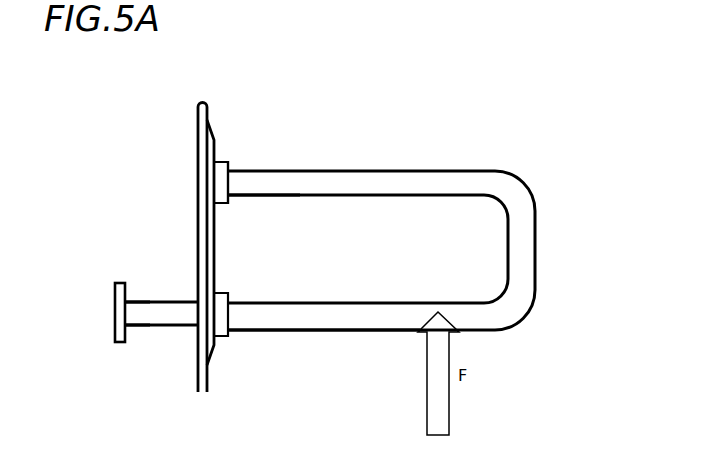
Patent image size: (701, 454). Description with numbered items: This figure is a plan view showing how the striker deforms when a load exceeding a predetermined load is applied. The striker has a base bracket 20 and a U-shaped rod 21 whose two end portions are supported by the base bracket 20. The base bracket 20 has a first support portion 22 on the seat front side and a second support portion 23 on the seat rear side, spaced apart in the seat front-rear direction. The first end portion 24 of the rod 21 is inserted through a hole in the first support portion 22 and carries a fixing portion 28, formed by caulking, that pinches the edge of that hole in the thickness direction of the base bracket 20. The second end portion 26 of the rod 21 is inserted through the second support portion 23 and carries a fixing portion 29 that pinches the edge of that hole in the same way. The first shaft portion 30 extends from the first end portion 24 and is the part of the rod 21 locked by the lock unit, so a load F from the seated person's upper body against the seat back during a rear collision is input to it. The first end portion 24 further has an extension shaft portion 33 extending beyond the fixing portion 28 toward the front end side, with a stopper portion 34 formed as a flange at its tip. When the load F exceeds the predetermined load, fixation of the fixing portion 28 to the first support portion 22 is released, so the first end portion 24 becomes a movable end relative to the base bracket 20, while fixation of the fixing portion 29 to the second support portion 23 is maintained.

The base bracket 20 is at (192, 103).
The rod 21 is at (524, 192).
The first support portion 22 is at (214, 352).
The second support portion 23 is at (218, 160).
The first end portion 24 is at (112, 328).
The second end portion 26 is at (234, 206).
The fixing portion 28 is at (226, 310).
The fixing portion 29 is at (232, 178).
The first shaft portion 30 is at (381, 318).
The extension shaft portion 33 is at (159, 322).
The stopper portion 34 is at (114, 291).